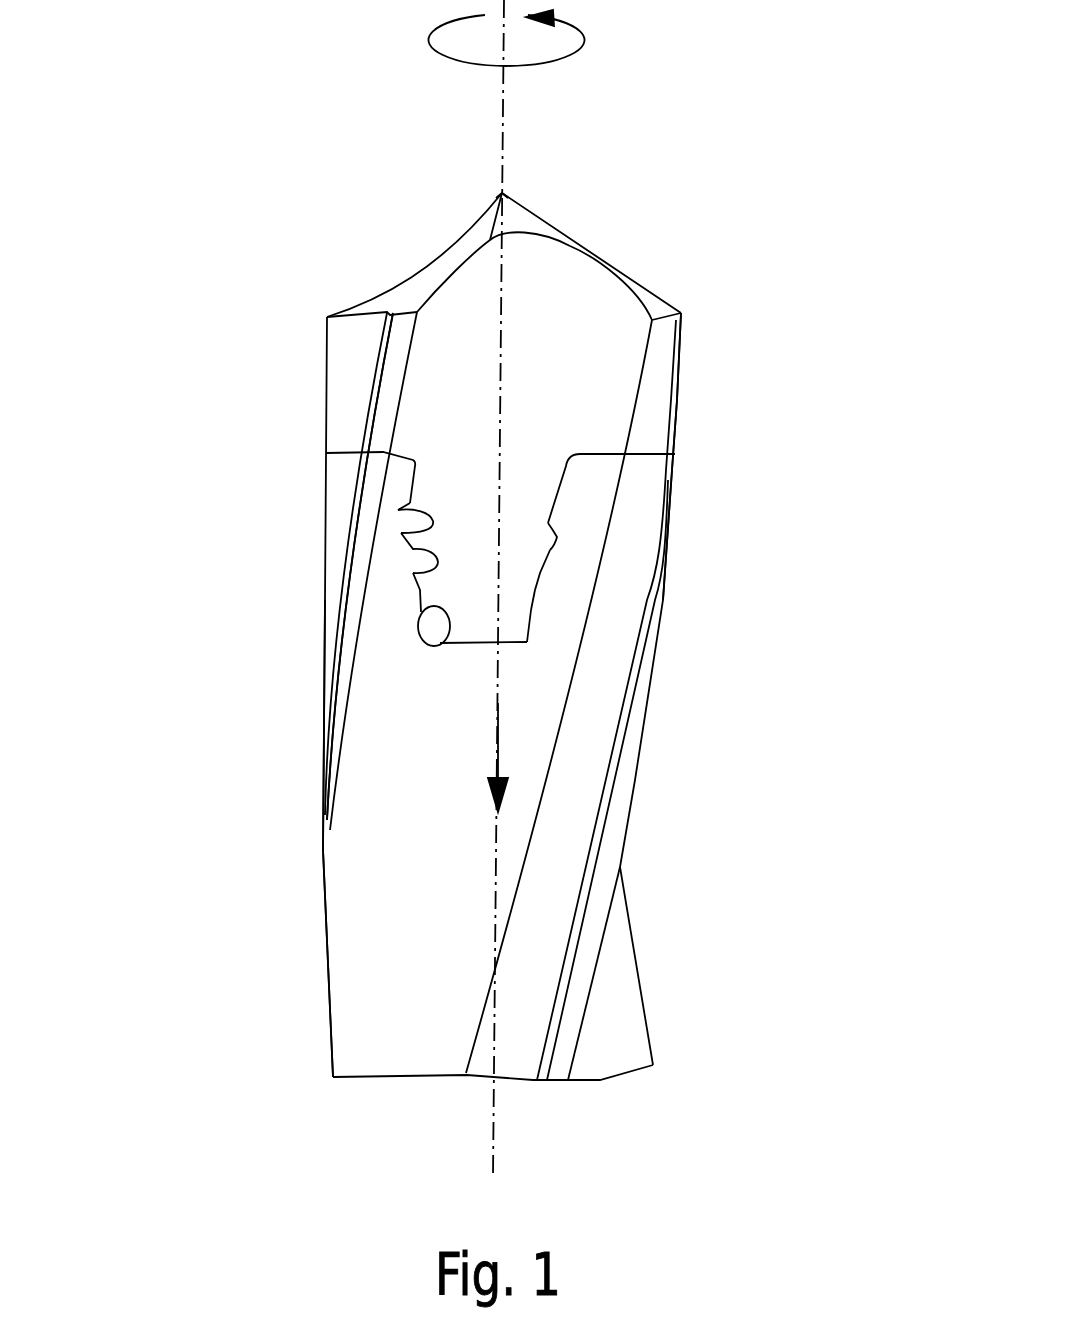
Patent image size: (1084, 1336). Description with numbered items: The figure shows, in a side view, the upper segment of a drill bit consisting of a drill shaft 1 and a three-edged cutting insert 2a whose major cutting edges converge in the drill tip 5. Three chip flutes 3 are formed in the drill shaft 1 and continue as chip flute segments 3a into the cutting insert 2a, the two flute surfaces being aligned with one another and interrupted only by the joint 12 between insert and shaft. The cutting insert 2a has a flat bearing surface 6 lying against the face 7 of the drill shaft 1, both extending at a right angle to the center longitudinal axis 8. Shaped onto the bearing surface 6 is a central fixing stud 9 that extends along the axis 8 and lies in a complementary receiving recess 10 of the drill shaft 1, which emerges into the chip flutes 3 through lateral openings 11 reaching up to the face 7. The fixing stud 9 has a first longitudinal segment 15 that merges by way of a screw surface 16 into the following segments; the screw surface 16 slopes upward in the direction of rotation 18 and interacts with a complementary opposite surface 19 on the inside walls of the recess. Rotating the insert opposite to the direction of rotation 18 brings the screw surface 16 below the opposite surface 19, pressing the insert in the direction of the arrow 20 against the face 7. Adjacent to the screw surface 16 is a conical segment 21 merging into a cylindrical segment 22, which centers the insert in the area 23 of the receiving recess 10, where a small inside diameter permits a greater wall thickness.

The drill shaft 1 is at (630, 822).
The cutting insert 2a is at (655, 358).
The chip flutes 3 is at (393, 978).
The chip flute segments 3a is at (557, 322).
The drill tip 5 is at (504, 190).
The bearing surface 6 is at (338, 453).
The face 7 is at (644, 455).
The center longitudinal axis 8 is at (495, 1125).
The fixing stud 9 is at (537, 597).
The receiving recess 10 is at (447, 640).
The lateral openings 11 is at (413, 574).
The joint 12 is at (417, 577).
The first longitudinal segment 15 is at (560, 490).
The screw surface 16 is at (557, 530).
The direction of rotation 18 is at (583, 40).
The opposite surface 19 is at (432, 529).
The arrow 20 is at (498, 731).
The conical segment 21 is at (550, 554).
The cylindrical segment 22 is at (530, 627).
The area 23 is at (398, 612).